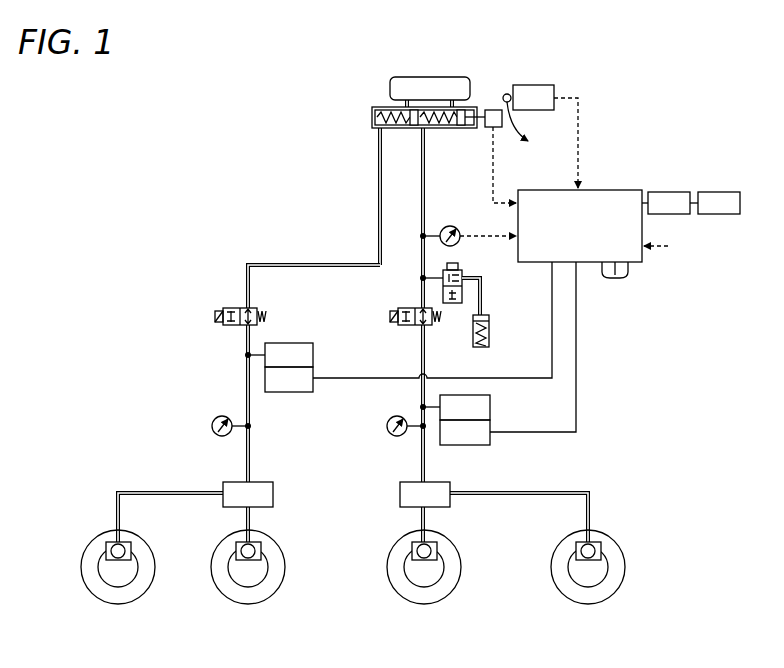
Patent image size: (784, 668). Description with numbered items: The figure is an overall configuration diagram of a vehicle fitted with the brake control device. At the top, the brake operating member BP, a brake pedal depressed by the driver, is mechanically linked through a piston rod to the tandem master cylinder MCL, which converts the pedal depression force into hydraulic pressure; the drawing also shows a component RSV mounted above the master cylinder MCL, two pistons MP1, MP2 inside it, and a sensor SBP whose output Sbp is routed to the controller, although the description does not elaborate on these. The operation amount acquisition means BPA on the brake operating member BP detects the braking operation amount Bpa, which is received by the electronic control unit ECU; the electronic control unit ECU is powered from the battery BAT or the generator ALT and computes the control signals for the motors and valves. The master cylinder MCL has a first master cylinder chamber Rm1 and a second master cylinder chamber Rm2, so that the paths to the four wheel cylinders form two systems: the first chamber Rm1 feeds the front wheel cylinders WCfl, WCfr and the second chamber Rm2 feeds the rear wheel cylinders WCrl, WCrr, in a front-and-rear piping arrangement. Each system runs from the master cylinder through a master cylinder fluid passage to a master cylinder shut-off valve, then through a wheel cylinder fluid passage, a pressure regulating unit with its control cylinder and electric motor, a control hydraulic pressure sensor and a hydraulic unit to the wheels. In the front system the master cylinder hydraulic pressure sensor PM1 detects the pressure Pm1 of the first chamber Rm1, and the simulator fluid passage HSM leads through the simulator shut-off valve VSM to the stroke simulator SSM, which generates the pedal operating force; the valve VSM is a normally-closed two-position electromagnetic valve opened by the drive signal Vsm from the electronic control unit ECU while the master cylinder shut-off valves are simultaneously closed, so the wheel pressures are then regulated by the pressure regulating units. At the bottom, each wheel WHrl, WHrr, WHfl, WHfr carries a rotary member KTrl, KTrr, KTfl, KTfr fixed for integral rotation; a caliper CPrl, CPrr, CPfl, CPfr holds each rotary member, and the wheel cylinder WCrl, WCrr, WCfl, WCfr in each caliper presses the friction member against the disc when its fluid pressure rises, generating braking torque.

The tandem master cylinder MCL is at (378, 105).
The reservoir RSV is at (430, 88).
The first master piston MP1 is at (461, 126).
The second master piston MP2 is at (414, 126).
The first master cylinder chamber Rm1 is at (423, 135).
The second master cylinder chamber Rm2 is at (372, 119).
The brake pedal stroke sensor SBP is at (493, 110).
The brake operating member BP is at (529, 125).
The operation amount acquisition means BPA is at (533, 97).
The braking operation amount Bpa is at (583, 143).
The brake pedal stroke signal Sbp is at (508, 165).
The electronic control unit ECU is at (580, 226).
The battery BAT is at (666, 203).
The generator ALT is at (715, 203).
The master cylinder hydraulic pressure sensor PM1 is at (443, 226).
The master cylinder hydraulic pressure Pm1 is at (488, 226).
The simulator shut-off valve VSM is at (459, 278).
The simulator fluid passage HSM is at (484, 306).
The stroke simulator SSM is at (490, 338).
The simulator shut-off valve drive signal Vsm is at (613, 281).
The rear-left rotary member KTrl is at (118, 567).
The rear-left wheel cylinder WCrl is at (132, 541).
The rear-left brake caliper CPrl is at (132, 552).
The rear-left wheel WHrl is at (118, 604).
The rear-right rotary member KTrr is at (248, 567).
The rear-right wheel cylinder WCrr is at (262, 541).
The rear-right brake caliper CPrr is at (262, 552).
The rear-right wheel WHrr is at (248, 604).
The front-left rotary member KTfl is at (424, 567).
The front-left wheel cylinder WCfl is at (438, 541).
The front-left brake caliper CPfl is at (438, 552).
The front-left wheel WHfl is at (424, 604).
The front-right rotary member KTfr is at (588, 567).
The front-right wheel cylinder WCfr is at (602, 541).
The front-right brake caliper CPfr is at (602, 552).
The front-right wheel WHfr is at (588, 604).